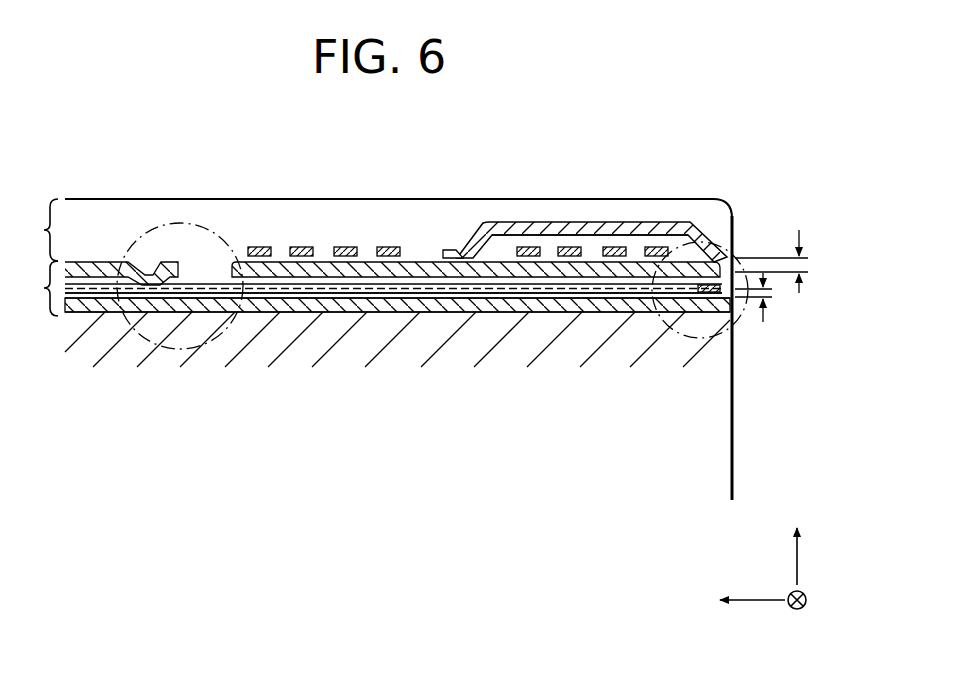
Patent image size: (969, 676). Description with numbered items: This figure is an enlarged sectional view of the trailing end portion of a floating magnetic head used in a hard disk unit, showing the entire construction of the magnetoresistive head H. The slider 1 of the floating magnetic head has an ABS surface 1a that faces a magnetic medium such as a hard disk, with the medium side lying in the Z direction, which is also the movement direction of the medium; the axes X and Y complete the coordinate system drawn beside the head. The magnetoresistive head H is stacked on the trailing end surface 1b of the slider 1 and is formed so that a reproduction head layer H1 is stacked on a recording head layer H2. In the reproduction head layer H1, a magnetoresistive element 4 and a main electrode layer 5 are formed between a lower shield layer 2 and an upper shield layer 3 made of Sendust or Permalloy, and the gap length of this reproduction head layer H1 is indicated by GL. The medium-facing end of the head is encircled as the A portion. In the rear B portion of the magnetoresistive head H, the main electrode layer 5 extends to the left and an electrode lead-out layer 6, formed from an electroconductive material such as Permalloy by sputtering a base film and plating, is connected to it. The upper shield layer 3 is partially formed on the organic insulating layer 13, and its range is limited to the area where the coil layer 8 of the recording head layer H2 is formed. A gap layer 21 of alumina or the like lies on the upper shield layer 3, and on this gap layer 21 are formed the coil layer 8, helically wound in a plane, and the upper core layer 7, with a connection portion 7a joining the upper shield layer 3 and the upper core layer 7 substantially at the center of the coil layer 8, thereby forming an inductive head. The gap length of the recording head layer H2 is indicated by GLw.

The slider 1 is at (735, 424).
The ABS surface 1a is at (735, 364).
The trailing end surface 1b is at (463, 313).
The lower shield layer 2 is at (527, 306).
The upper shield layer 3 is at (388, 294).
The magnetoresistive element 4 is at (702, 294).
The main electrode layer 5 is at (590, 296).
The electrode lead-out layer 6 is at (92, 262).
The upper core layer 7 is at (632, 221).
The connection portion 7a is at (460, 250).
The coil layer 8 is at (388, 247).
The organic insulating layer 13 is at (323, 270).
The gap layer 21 is at (500, 255).
The A portion A is at (667, 349).
The B portion B is at (210, 350).
The magnetoresistive head H is at (214, 193).
The reproduction head layer H1 is at (30, 288).
The recording head layer H2 is at (30, 230).
The gap length of reproduction head layer GL is at (772, 295).
The gap length of recording head layer GLw is at (808, 265).
The X direction X is at (797, 618).
The Y direction Y is at (732, 602).
The Z direction Z is at (797, 534).